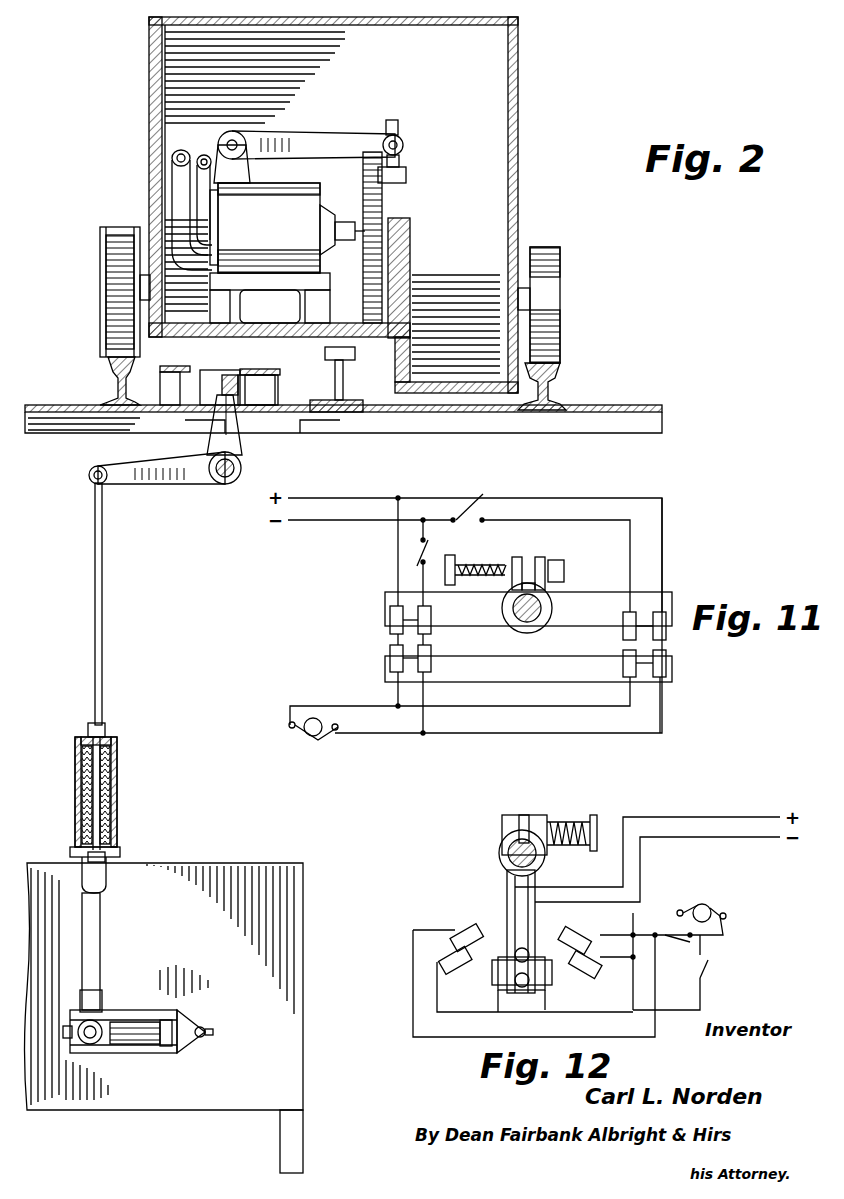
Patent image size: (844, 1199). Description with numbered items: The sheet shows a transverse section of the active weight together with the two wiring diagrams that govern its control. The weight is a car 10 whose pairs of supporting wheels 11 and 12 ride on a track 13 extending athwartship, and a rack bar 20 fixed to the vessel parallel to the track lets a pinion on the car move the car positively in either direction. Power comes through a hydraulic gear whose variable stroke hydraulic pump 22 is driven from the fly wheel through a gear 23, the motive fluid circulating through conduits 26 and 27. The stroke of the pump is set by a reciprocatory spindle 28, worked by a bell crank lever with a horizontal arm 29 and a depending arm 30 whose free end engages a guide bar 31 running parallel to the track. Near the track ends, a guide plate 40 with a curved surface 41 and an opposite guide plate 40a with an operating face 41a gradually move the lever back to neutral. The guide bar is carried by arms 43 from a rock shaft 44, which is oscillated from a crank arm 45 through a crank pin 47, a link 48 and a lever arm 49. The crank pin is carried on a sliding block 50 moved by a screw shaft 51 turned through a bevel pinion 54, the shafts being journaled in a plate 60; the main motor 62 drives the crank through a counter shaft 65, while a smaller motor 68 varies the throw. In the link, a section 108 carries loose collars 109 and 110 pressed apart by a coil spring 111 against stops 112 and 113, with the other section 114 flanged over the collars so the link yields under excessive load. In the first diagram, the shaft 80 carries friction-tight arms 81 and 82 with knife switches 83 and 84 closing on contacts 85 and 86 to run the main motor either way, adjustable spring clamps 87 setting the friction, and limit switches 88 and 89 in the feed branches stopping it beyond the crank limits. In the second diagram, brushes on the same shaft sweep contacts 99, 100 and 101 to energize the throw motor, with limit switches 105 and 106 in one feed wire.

In FIG. 2, the car 10 is at (518, 177).
In FIG. 2, the supporting wheels 11 is at (118, 296).
In FIG. 2, the supporting wheels 12 is at (556, 282).
In FIG. 2, the track 13 is at (110, 378).
In FIG. 2, the rack bar 20 is at (352, 355).
In FIG. 2, the variable stroke hydraulic pump 22 is at (287, 253).
In FIG. 2, the gear 23 is at (384, 170).
In FIG. 2, the conduit 26 is at (172, 160).
In FIG. 2, the conduit 27 is at (222, 150).
In FIG. 2, the reciprocatory spindle 28 is at (398, 130).
In FIG. 2, the arm 29 is at (300, 138).
In FIG. 2, the depending arm 30 is at (232, 321).
In FIG. 2, the guide bar 31 is at (222, 385).
In FIG. 2, the guide plate 40 is at (172, 370).
In FIG. 2, the guide plate 40a is at (285, 363).
In FIG. 2, the curved surface 41 is at (215, 370).
In FIG. 2, the operating face 41a is at (256, 393).
In FIG. 2, the arms 43 is at (237, 447).
In FIG. 2, the rock shaft 44 is at (225, 485).
In FIG. 2, the crank arm 45 is at (110, 1015).
In FIG. 2, the crank pin 47 is at (92, 1042).
In FIG. 2, the link 48 is at (82, 1000).
In FIG. 2, the lever arm 49 is at (180, 484).
In FIG. 2, the block 50 is at (70, 1038).
In FIG. 2, the screw shaft 51 is at (145, 1025).
In FIG. 2, the bevel pinion 54 is at (170, 1025).
In FIG. 2, the plate 60 is at (180, 1045).
In FIG. 11, the main motor 62 is at (313, 736).
In FIG. 2, the counter shaft 65 is at (208, 1036).
In FIG. 12, the motor 68 is at (712, 908).
In FIG. 11, the shaft 80 is at (530, 620).
In FIG. 12, the shaft 80 is at (512, 852).
In FIG. 11, the arm 81 is at (578, 600).
In FIG. 11, the arm 82 is at (594, 604).
In FIG. 11, the knife switch 83 is at (390, 625).
In FIG. 11, the knife switch 84 is at (623, 636).
In FIG. 11, the contacts 85 is at (392, 652).
In FIG. 11, the contacts 86 is at (623, 666).
In FIG. 11, the adjustable spring clamps 87 is at (490, 565).
In FIG. 11, the limit switch 88 is at (428, 552).
In FIG. 11, the limit switch 89 is at (482, 518).
In FIG. 12, the contacts 99 is at (468, 933).
In FIG. 12, the contacts 100 is at (530, 958).
In FIG. 12, the contacts 101 is at (582, 938).
In FIG. 12, the switch 105 is at (678, 940).
In FIG. 12, the switch 106 is at (706, 972).
In FIG. 2, the link section 108 is at (102, 595).
In FIG. 2, the collar 109 is at (76, 748).
In FIG. 2, the collar 110 is at (72, 850).
In FIG. 2, the coil spring 111 is at (82, 797).
In FIG. 2, the stop 112 is at (88, 728).
In FIG. 2, the stop 113 is at (82, 872).
In FIG. 2, the link section 114 is at (84, 925).